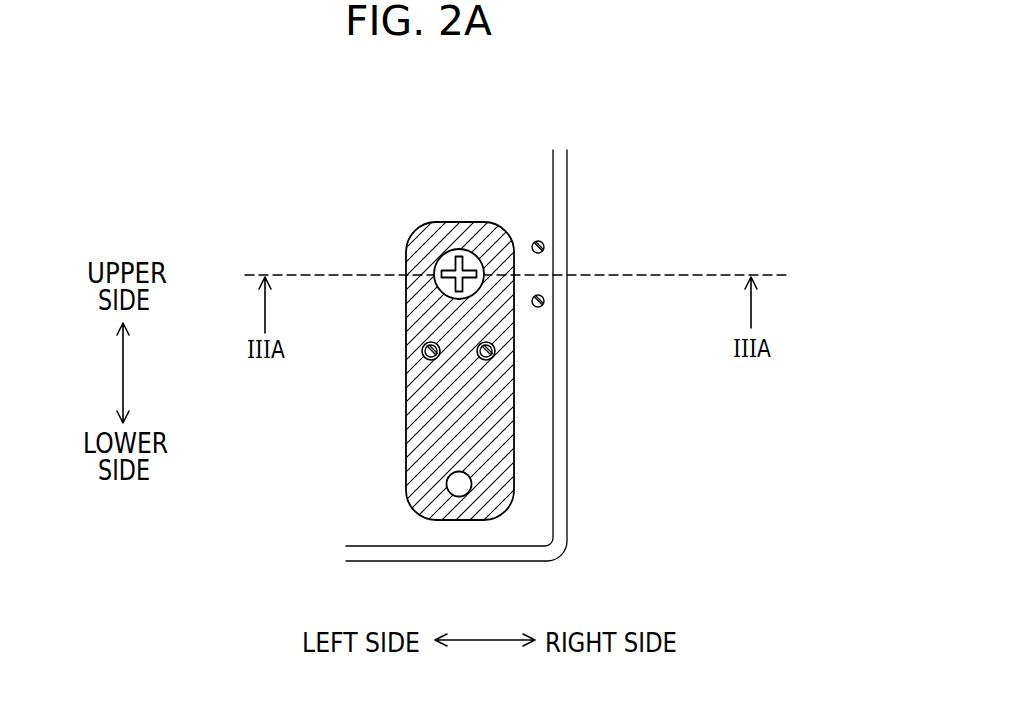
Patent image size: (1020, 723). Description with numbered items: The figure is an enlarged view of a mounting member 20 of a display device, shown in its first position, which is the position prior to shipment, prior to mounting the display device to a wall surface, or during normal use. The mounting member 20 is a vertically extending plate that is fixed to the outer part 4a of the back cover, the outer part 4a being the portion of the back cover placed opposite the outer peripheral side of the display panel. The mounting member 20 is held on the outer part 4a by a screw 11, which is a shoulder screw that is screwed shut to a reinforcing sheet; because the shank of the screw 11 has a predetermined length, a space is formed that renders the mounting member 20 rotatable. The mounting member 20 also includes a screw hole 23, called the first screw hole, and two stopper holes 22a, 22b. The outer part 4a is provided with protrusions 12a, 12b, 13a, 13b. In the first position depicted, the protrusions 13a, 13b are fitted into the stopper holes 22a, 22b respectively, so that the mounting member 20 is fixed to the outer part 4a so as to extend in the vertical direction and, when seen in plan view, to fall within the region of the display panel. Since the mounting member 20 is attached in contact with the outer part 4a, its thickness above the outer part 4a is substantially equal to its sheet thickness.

The mounting member 20 is at (461, 182).
The screw 11 is at (442, 253).
The protrusion 12a is at (545, 300).
The protrusion 12b is at (545, 246).
The stopper hole 22a is at (424, 349).
The stopper hole 22b is at (495, 349).
The protrusion 13a is at (428, 356).
The protrusion 13b is at (494, 355).
The screw hole 23 is at (446, 487).
The outer part 4a is at (540, 477).